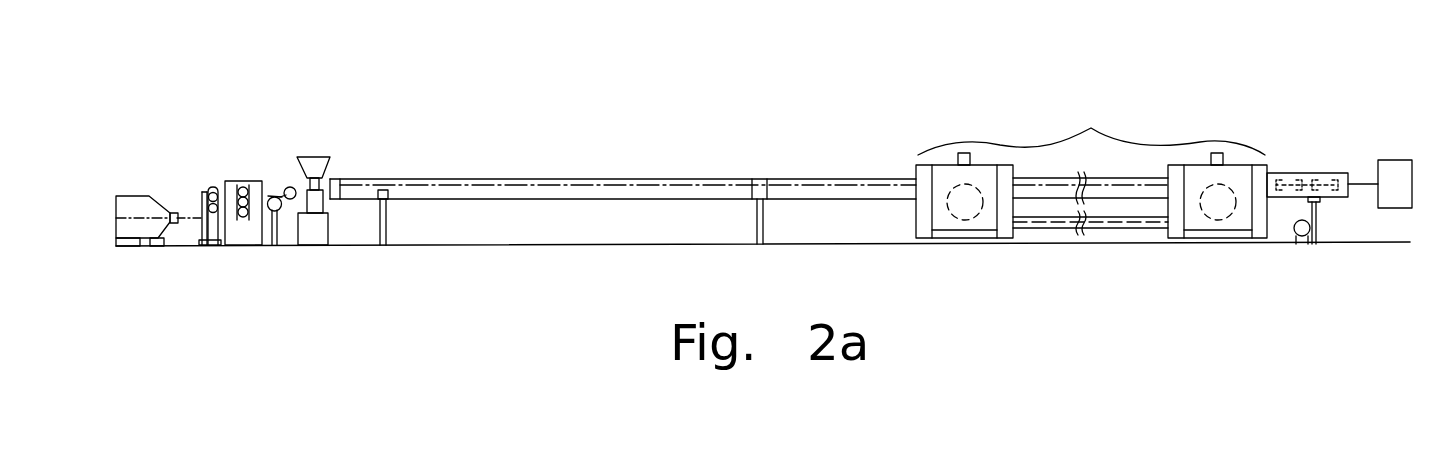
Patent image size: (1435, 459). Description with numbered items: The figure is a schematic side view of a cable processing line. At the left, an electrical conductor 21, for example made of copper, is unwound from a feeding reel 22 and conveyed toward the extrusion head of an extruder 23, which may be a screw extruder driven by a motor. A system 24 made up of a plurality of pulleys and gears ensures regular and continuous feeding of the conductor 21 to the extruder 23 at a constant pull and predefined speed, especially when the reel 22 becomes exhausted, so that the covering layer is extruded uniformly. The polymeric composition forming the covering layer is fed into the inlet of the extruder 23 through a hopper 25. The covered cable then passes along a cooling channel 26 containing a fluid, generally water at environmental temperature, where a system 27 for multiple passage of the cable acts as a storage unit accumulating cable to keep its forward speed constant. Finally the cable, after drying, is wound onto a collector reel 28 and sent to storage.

The electrical conductor 21 is at (193, 218).
The feeding reel 22 is at (126, 205).
The extruder 23 is at (316, 179).
The system of pulleys and gears 24 is at (244, 168).
The hopper 25 is at (314, 165).
The cooling channel 26 is at (594, 192).
The system for multiple passage of the cable 27 is at (1092, 125).
The collector reel 28 is at (1392, 178).